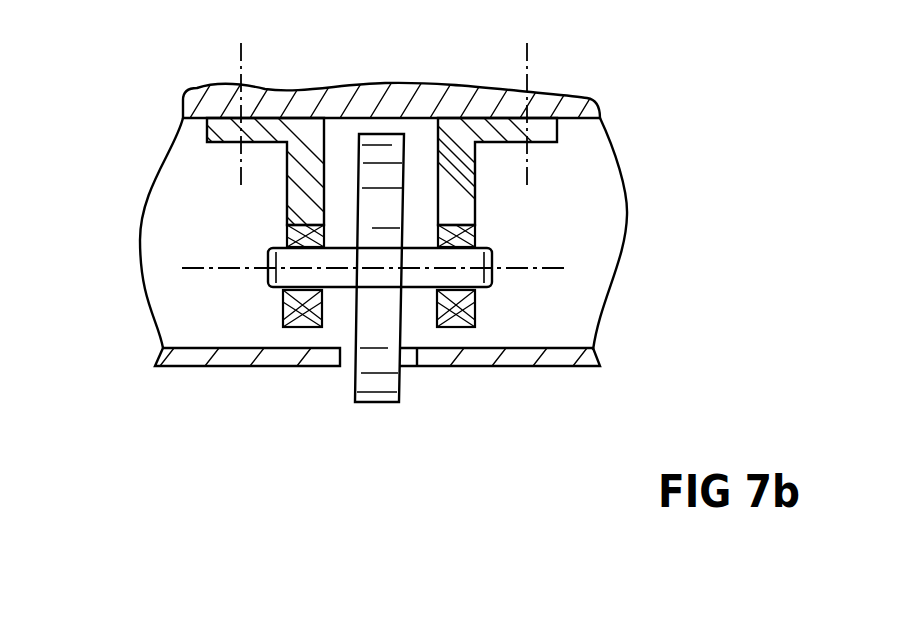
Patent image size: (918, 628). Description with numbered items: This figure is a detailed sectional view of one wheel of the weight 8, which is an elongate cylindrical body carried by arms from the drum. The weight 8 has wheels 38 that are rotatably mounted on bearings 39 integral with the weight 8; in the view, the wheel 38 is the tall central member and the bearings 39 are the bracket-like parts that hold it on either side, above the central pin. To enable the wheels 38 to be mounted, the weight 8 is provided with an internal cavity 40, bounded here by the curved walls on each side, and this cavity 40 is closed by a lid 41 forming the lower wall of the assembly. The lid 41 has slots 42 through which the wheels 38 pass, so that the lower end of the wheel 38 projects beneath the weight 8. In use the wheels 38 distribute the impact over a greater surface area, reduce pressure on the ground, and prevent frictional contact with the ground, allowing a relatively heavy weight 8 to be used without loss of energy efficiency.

The weight 8 is at (560, 112).
The bearings 39 is at (286, 223).
The internal cavity 40 is at (207, 233).
The lid 41 is at (593, 320).
The wheels 38 is at (373, 302).
The slots 42 is at (347, 351).